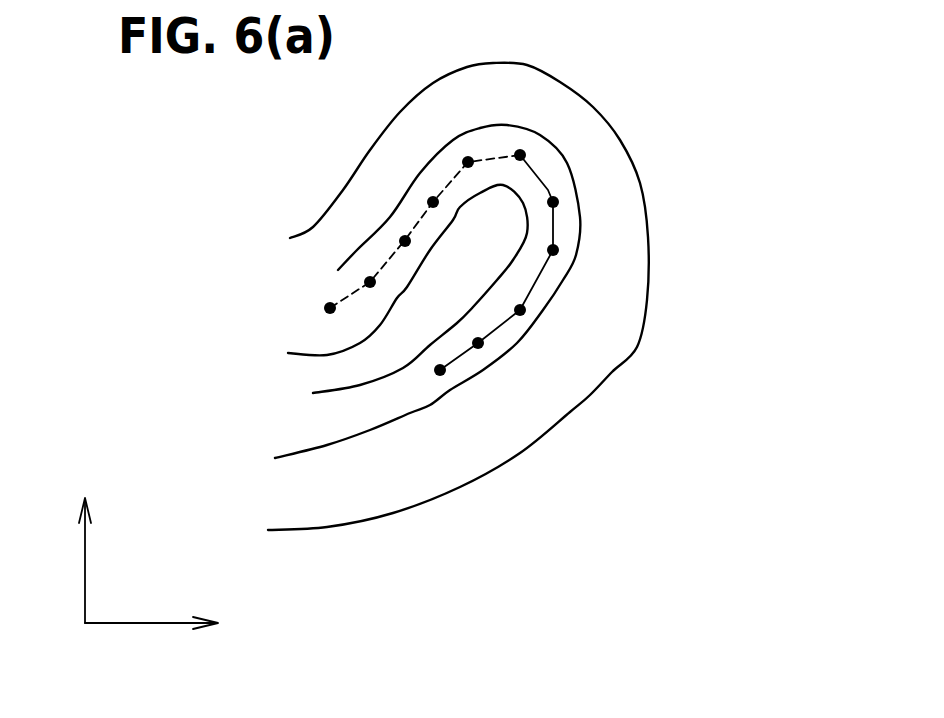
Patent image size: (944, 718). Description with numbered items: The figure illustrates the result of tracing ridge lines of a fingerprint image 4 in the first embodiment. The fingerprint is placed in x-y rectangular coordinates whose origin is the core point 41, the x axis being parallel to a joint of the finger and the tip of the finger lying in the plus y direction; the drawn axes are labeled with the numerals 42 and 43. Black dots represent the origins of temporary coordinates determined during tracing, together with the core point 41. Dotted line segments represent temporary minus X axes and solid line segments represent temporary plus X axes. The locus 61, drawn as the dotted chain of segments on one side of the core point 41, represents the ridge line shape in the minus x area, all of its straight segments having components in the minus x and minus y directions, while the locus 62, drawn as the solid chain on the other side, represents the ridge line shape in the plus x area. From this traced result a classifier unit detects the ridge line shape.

The fingerprint image 4 is at (520, 453).
The core point 41 is at (520, 155).
The x axis 42 is at (155, 623).
The y axis 43 is at (84, 572).
The locus 61 is at (421, 218).
The locus 62 is at (500, 326).